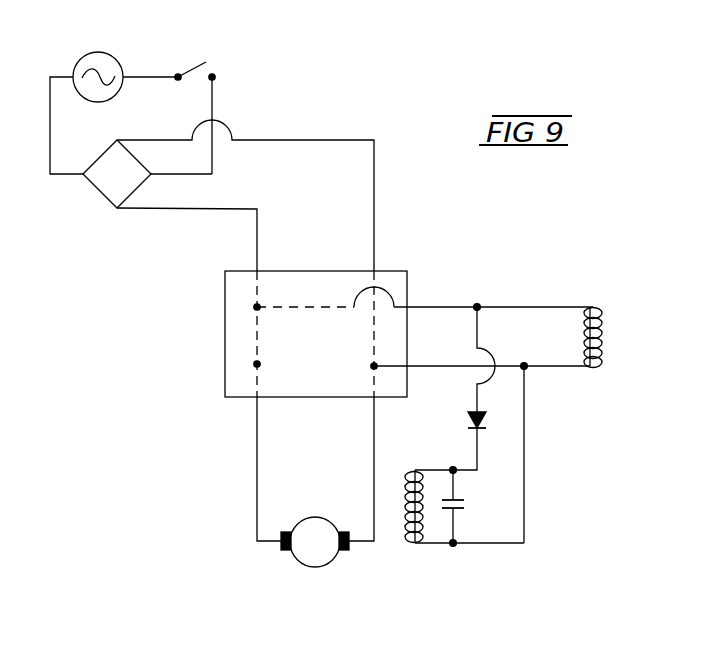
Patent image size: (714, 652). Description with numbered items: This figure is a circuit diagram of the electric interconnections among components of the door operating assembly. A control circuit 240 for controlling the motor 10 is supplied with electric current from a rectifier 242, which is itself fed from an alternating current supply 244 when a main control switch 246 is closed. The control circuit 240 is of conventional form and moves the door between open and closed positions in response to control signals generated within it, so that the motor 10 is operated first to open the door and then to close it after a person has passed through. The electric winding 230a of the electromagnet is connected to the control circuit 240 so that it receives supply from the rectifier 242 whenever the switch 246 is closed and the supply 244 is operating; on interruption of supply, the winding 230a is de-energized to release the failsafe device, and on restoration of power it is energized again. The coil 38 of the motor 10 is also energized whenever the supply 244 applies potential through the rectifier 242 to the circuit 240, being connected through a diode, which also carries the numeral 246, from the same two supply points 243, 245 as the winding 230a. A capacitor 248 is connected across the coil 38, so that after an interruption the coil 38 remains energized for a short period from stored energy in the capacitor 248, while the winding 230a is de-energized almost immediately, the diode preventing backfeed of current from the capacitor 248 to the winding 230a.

The alternating current supply 244 is at (93, 52).
The main control switch 246 is at (195, 67).
The rectifier 242 is at (104, 196).
The control circuit 240 is at (232, 340).
The supply point 243 is at (477, 293).
The supply point 245 is at (524, 359).
The electric winding 230a is at (602, 321).
The capacitor 248 is at (460, 512).
The coil 38 is at (424, 540).
The motor 10 is at (307, 556).